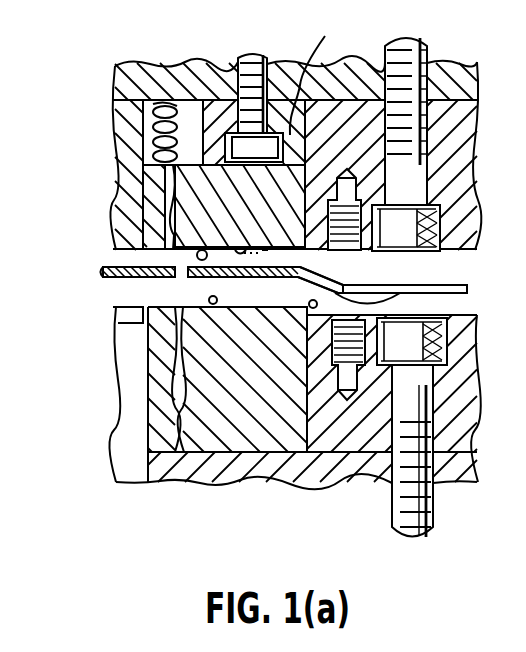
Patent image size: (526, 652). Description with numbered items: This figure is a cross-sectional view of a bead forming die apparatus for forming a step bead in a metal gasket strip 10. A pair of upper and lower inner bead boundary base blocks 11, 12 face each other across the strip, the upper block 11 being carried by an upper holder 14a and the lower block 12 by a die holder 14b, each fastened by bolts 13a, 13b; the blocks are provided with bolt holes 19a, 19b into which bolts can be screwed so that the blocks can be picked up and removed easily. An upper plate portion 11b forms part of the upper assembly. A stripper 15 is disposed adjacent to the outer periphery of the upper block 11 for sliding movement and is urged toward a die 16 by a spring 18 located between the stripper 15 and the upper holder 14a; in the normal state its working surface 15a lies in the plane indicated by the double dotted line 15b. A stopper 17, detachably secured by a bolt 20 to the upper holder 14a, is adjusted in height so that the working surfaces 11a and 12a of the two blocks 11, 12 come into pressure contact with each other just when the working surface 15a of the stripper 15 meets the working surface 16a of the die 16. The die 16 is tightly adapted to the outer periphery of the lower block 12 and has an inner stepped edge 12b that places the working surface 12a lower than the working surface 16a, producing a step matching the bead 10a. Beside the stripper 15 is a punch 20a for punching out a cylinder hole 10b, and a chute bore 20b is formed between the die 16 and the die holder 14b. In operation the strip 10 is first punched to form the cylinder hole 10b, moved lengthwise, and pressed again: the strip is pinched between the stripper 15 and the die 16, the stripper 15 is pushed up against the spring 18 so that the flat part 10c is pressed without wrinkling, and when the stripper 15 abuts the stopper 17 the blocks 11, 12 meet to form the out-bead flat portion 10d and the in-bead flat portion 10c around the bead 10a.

The metal strip 10 is at (127, 272).
The bead 10a is at (318, 268).
The cylinder hole 10b is at (455, 288).
The flat part 10c is at (363, 271).
The out-bead flat portion 10d is at (237, 272).
The upper inner bead boundary base block 11 is at (470, 208).
The working surface of upper inner bead boundary base block 11a is at (303, 160).
The upper die plate 11b is at (330, 24).
The lower inner bead boundary base block 12 is at (447, 390).
The working surface of lower inner bead boundary base block 12a is at (227, 360).
The inner stepped edge 12b is at (230, 332).
The bolt 13a is at (457, 238).
The bolt 13b is at (460, 325).
The upper holder 14a is at (457, 70).
The die holder 14b is at (450, 470).
The stripper 15 is at (150, 190).
The working surface of stripper 15a is at (176, 214).
The double dotted line 15b is at (237, 241).
The die 16 is at (267, 473).
The working surface of die 16a is at (213, 315).
The stopper 17 is at (305, 70).
The spring 18 is at (165, 100).
The bolt hole 19a is at (360, 197).
The bolt hole 19b is at (350, 402).
The adjusting bolt 20 is at (252, 62).
The punch 20a is at (114, 213).
The chute bore 20b is at (114, 402).